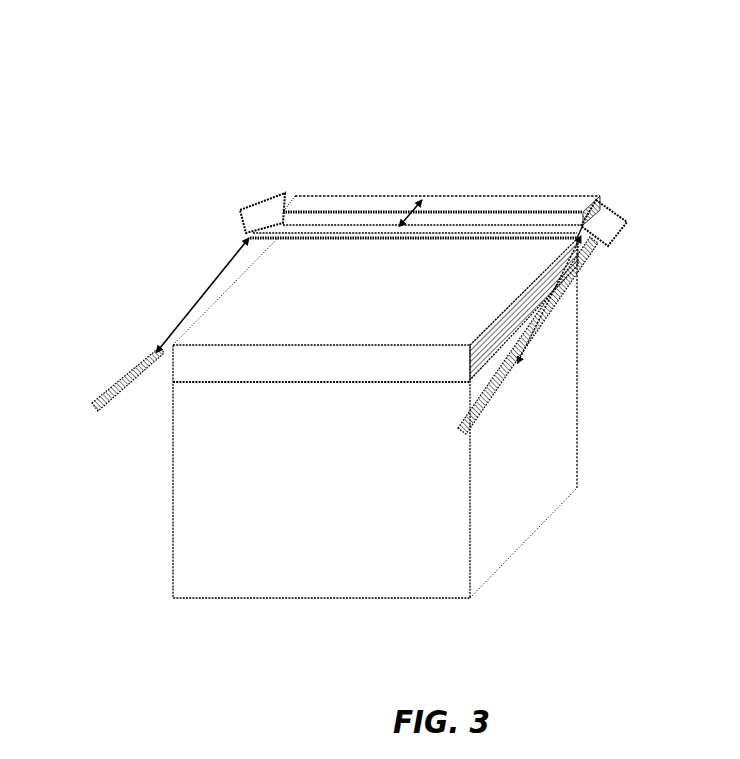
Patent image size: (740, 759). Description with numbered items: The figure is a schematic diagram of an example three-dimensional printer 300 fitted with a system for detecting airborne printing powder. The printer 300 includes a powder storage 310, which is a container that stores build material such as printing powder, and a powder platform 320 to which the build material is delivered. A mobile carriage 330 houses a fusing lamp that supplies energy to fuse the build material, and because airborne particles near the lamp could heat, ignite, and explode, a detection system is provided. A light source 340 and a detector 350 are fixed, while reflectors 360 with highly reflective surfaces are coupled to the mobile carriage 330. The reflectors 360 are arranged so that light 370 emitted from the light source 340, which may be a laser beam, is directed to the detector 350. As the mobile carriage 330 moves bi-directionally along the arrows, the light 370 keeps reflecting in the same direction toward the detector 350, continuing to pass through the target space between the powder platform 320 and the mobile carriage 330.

The 3D printer 300 is at (126, 90).
The powder storage 310 is at (577, 488).
The powder platform 320 is at (557, 283).
The mobile carriage 330 is at (500, 197).
The light source 340 is at (110, 387).
The detector 350 is at (523, 370).
The reflectors 360 is at (245, 208).
The light 370 is at (208, 282).